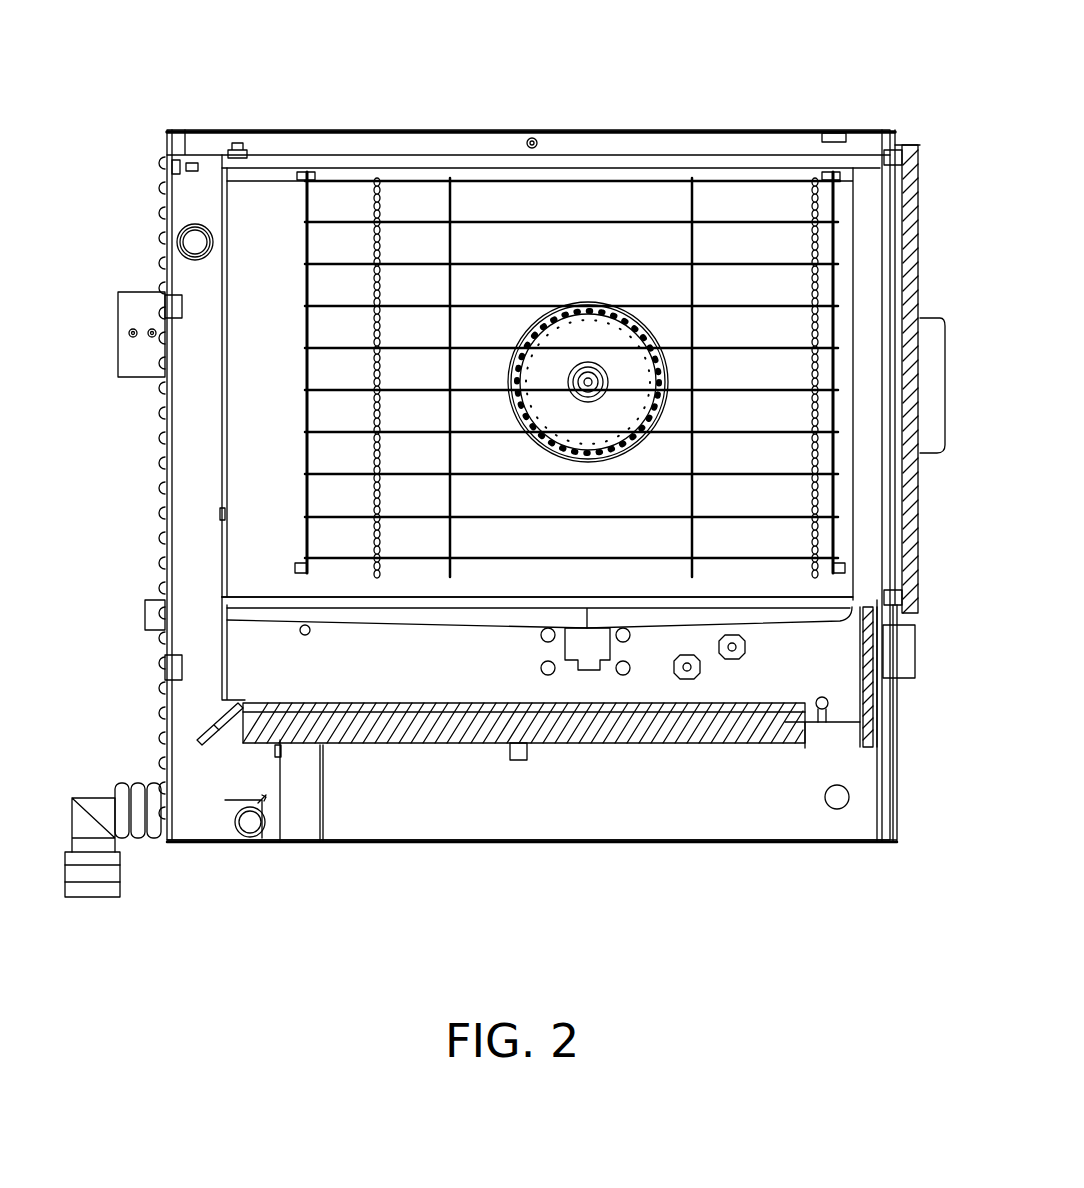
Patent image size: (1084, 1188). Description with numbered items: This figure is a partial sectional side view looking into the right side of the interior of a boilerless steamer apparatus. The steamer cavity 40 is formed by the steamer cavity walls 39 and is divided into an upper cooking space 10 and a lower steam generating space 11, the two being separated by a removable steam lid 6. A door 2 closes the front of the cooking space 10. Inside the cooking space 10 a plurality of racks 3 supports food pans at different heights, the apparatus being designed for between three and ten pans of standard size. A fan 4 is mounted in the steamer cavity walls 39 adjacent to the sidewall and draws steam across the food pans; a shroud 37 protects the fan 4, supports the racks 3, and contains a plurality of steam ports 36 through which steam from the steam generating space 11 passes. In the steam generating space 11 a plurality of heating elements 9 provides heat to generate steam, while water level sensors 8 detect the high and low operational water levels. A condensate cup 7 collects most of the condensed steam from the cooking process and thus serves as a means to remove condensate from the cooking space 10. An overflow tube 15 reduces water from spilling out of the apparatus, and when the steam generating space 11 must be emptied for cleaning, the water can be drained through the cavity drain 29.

The door 2 is at (920, 560).
The racks 3 is at (483, 177).
The fan 4 is at (588, 333).
The removable steam lid 6 is at (442, 623).
The condensate cup 7 is at (585, 648).
The water level sensors 8 is at (732, 660).
The heating elements 9 is at (232, 722).
The cooking space 10 is at (282, 321).
The steam generating space 11 is at (365, 679).
The overflow tube 15 is at (300, 633).
The cavity drain 29 is at (828, 702).
The steam ports 36 is at (818, 240).
The shroud 37 is at (270, 183).
The steamer cavity walls 39 is at (217, 233).
The steamer cavity 40 is at (250, 640).